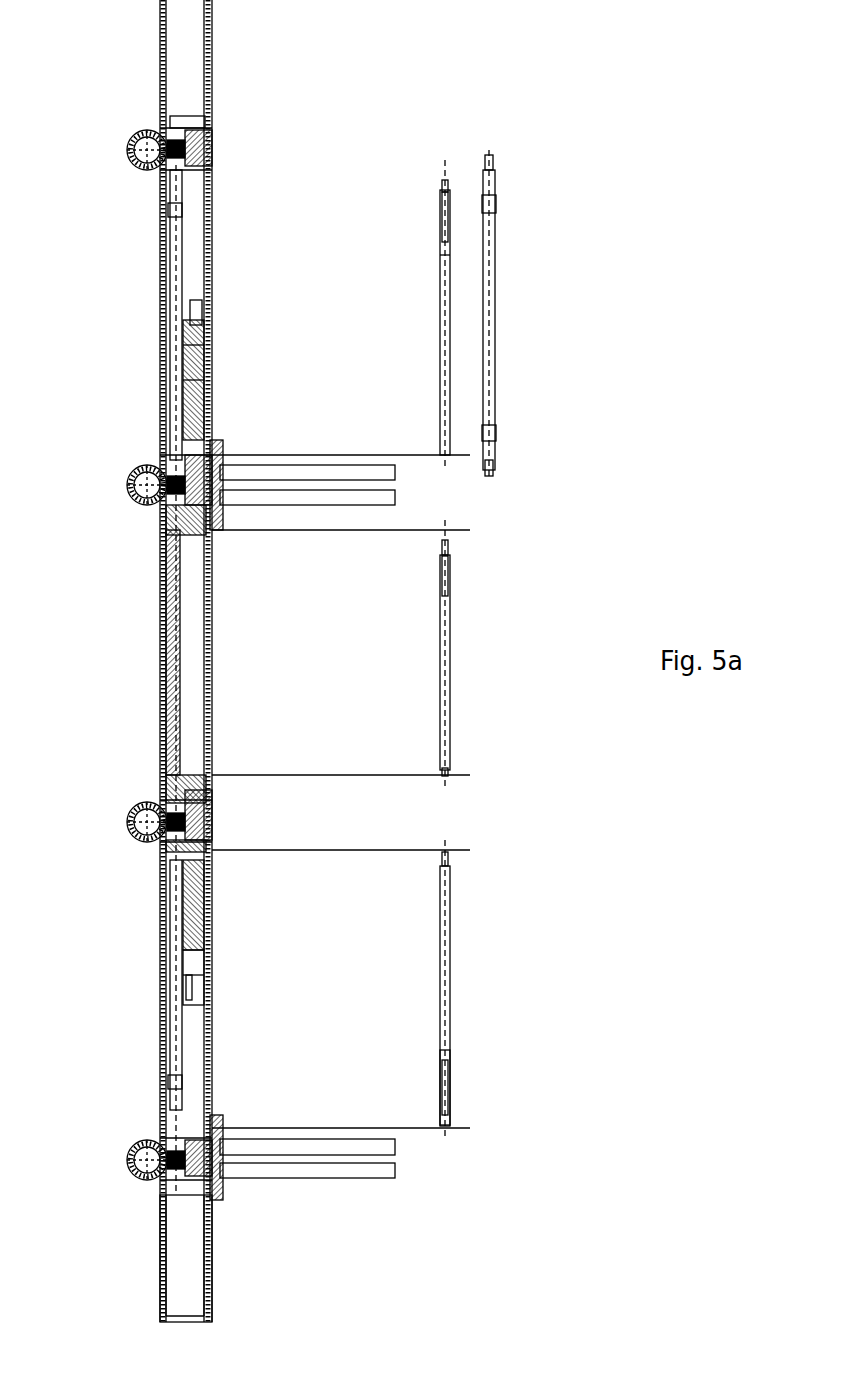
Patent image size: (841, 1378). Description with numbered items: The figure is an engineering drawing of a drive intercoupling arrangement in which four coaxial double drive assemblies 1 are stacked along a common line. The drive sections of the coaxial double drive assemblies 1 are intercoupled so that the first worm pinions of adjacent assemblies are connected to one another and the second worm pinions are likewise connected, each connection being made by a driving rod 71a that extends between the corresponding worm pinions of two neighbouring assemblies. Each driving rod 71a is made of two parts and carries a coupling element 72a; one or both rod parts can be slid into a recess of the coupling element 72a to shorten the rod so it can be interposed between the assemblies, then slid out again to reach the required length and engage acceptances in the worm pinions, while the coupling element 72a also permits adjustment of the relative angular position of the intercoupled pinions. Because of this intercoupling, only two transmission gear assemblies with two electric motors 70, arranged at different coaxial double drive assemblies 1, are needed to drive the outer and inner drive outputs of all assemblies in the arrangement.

The coaxial double drive assembly 1 is at (195, 150).
The electric motor 70 is at (197, 348).
The driving rod 71a is at (165, 338).
The coupling element 72a is at (165, 245).